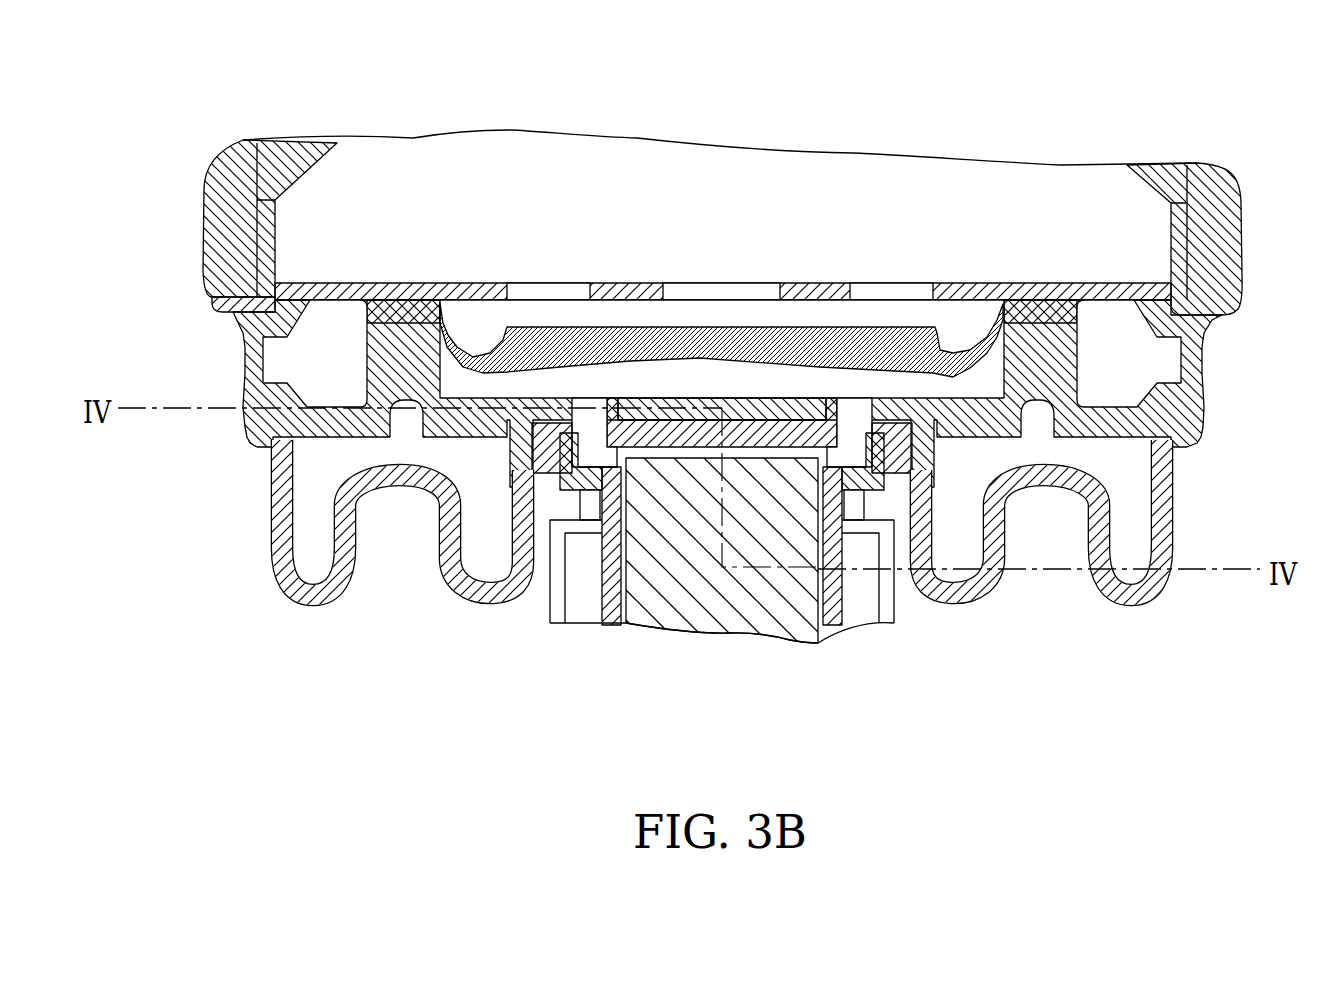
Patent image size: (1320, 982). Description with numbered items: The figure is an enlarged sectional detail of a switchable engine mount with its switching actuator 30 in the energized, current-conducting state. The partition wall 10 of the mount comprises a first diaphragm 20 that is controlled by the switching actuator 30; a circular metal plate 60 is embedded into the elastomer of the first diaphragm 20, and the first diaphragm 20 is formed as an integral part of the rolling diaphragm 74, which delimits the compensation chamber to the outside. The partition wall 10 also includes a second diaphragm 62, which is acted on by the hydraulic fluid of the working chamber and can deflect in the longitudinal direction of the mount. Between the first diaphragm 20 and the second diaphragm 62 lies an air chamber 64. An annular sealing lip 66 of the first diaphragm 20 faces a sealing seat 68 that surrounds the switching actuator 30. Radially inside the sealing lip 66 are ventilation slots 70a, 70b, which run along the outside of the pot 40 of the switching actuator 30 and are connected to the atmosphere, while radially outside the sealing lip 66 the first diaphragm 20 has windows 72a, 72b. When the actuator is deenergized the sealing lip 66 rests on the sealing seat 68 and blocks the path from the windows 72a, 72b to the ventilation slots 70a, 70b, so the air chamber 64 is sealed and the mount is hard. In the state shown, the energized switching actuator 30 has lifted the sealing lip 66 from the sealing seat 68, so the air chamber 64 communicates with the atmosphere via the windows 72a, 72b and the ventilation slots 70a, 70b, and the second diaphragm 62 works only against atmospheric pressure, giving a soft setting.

The partition wall 10 is at (407, 333).
The first diaphragm 20 is at (660, 398).
The switching actuator 30 is at (678, 592).
The pot 40 is at (767, 523).
The circular metal plate 60 is at (563, 623).
The second diaphragm 62 is at (917, 320).
The air chamber 64 is at (732, 380).
The annular sealing lip 66 is at (890, 620).
The sealing seat 68 is at (600, 490).
The ventilation slot 70a is at (623, 622).
The ventilation slot 70b is at (818, 640).
The window 72a is at (598, 410).
The window 72b is at (853, 413).
The rolling diaphragm 74 is at (313, 600).